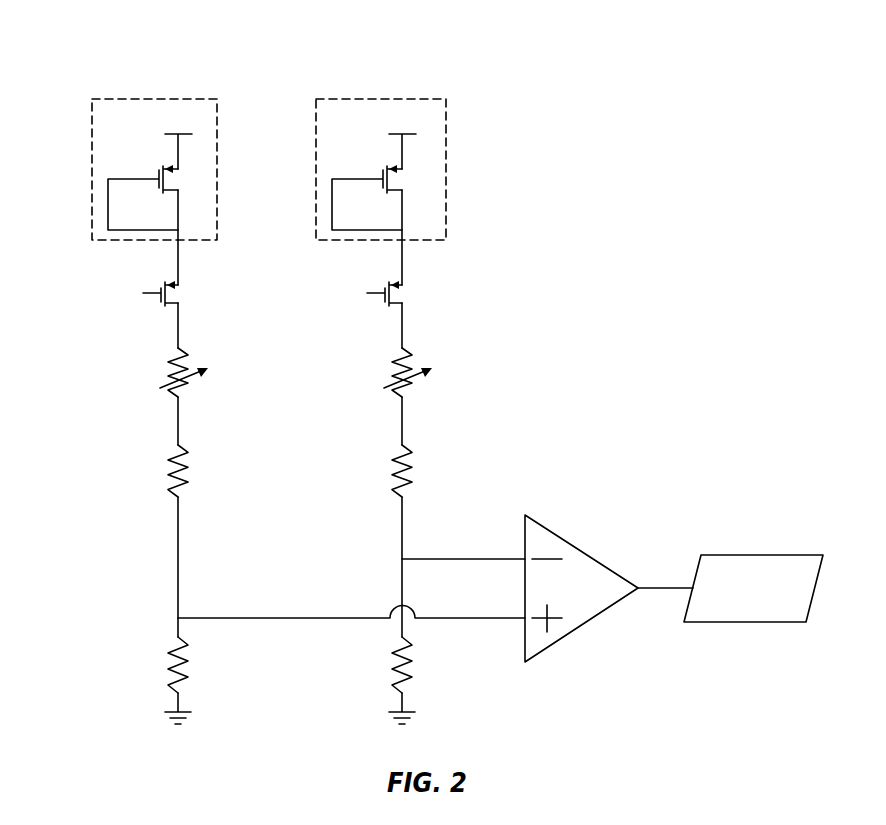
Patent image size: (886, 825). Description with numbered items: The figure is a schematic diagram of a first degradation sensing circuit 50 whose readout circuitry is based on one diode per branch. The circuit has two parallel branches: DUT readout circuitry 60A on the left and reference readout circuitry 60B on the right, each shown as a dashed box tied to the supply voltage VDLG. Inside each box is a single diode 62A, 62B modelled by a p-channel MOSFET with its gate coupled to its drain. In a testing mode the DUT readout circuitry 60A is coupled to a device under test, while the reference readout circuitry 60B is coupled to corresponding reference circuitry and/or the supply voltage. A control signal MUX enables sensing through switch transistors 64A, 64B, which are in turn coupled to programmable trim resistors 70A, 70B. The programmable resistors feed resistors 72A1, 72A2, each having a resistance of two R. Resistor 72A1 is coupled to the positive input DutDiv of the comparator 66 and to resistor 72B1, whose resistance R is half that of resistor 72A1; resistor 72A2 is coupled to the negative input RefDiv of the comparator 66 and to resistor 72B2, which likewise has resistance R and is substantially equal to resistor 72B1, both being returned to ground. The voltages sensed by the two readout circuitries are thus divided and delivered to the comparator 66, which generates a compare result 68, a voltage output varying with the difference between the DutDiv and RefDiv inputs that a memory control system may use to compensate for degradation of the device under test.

The first degradation sensing circuit 50 is at (529, 43).
The DUT readout circuitry 60A is at (163, 100).
The reference readout circuitry 60B is at (387, 100).
The diode 62A is at (158, 178).
The diode 62B is at (382, 178).
The transistor 64A is at (155, 292).
The transistor 64B is at (379, 292).
The programmable resistor 70A is at (172, 395).
The programmable resistor 70B is at (396, 395).
The resistor 72A1 is at (190, 470).
The resistor 72A2 is at (414, 470).
The resistor 72B1 is at (190, 663).
The resistor 72B2 is at (414, 663).
The comparator 66 is at (582, 549).
The compare result 68 is at (757, 555).